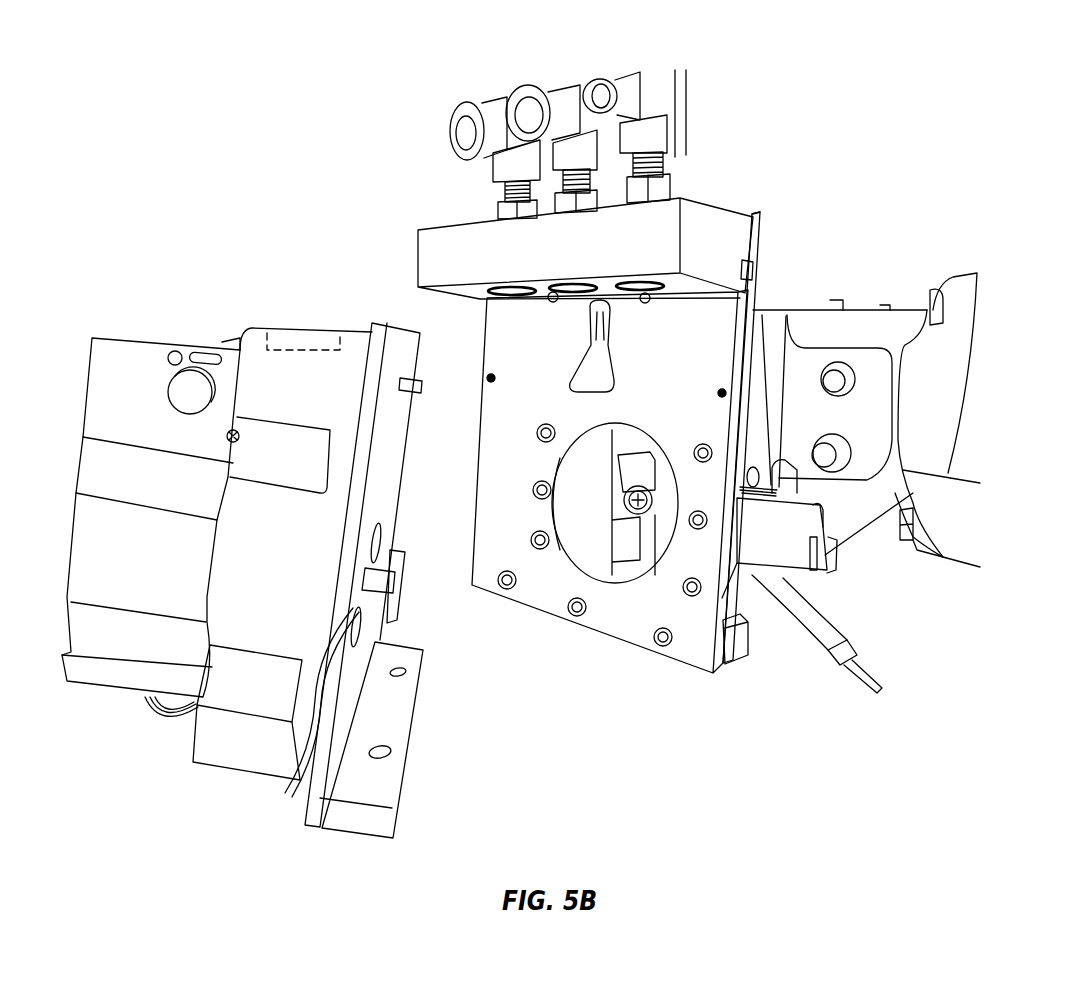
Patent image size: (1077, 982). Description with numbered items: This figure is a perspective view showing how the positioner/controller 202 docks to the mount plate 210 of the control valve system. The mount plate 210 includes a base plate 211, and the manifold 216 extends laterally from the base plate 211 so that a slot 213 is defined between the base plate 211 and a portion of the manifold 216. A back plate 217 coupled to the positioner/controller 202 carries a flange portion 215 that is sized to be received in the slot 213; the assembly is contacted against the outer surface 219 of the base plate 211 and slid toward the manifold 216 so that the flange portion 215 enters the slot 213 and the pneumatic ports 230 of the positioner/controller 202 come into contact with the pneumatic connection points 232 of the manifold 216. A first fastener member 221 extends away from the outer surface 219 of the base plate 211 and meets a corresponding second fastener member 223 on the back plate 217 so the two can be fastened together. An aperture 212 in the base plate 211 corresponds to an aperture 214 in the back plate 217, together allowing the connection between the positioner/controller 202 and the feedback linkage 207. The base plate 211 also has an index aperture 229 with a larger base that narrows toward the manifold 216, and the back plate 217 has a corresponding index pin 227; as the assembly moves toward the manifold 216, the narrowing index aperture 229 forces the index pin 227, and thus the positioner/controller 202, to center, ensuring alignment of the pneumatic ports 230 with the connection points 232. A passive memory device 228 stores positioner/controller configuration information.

The positioner/controller 202 is at (247, 335).
The feedback linkage 207 is at (640, 540).
The mount plate 210 is at (760, 213).
The base plate 211 is at (640, 440).
The aperture 212 is at (728, 300).
The slot 213 is at (755, 270).
The aperture 214 is at (293, 780).
The flange portion 215 is at (372, 330).
The manifold 216 is at (440, 237).
The back plate 217 is at (387, 500).
The outer surface 219 is at (700, 433).
The first fastener member 221 is at (737, 655).
The second fastener member 223 is at (387, 780).
The index pin 227 is at (415, 377).
The passive memory device 228 is at (823, 617).
The index aperture 229 is at (593, 367).
The pneumatic ports 230 is at (287, 333).
The pneumatic connection points 232 is at (509, 288).